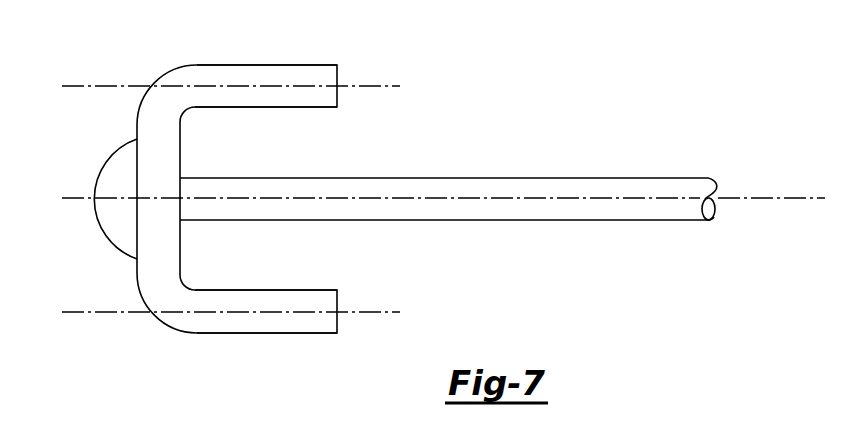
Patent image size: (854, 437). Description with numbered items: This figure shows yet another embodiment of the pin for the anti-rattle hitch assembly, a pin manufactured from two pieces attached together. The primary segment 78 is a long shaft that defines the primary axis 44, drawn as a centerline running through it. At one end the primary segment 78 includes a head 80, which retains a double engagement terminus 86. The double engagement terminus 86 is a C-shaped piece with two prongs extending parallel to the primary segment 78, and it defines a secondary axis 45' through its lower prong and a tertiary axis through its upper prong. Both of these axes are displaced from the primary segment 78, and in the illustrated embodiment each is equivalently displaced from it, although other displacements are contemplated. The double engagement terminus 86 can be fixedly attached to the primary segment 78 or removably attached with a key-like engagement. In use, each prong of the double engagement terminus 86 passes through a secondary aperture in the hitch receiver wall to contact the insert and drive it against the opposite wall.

The double engagement terminus 86 is at (210, 75).
The primary segment 78 is at (440, 190).
The head 80 is at (108, 218).
The primary axis 44 is at (778, 197).
The secondary axis 45' is at (231, 356).